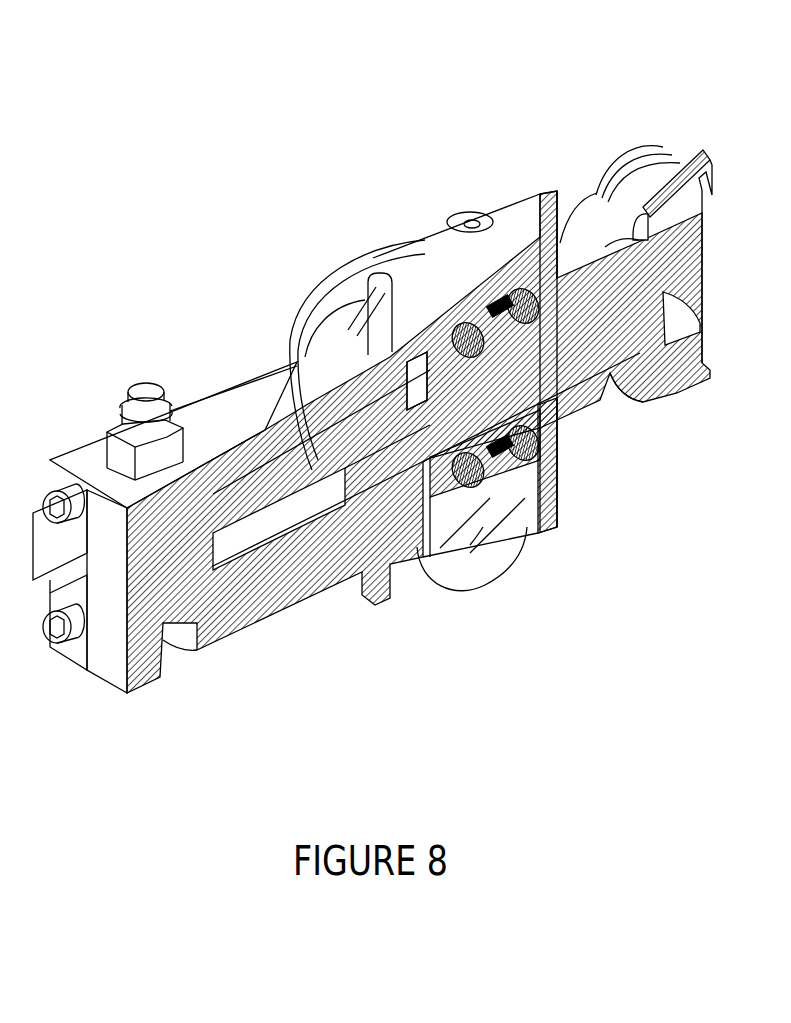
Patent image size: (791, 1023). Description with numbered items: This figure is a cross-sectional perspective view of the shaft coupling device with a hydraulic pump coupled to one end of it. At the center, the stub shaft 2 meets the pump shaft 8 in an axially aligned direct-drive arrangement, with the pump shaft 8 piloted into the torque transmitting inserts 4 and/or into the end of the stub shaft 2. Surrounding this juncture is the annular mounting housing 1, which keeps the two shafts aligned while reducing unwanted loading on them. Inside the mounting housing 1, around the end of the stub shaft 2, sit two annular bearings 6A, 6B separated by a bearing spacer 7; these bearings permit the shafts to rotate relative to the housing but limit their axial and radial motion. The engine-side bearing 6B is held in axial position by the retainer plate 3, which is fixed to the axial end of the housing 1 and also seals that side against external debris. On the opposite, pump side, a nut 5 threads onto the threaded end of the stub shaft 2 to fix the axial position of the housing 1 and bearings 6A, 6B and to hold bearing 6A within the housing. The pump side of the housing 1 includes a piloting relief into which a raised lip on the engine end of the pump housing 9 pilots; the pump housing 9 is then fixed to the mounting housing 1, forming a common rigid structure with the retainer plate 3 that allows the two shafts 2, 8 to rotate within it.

The mounting housing 1 is at (392, 221).
The stub shaft 2 is at (681, 158).
The retainer plate 3 is at (552, 190).
The torque transmitting inserts 4 is at (421, 399).
The nut 5 is at (308, 458).
The bearing 6A is at (460, 303).
The bearing 6B is at (524, 271).
The bearing spacer 7 is at (499, 315).
The pump shaft 8 is at (425, 368).
The pump housing 9 is at (92, 428).